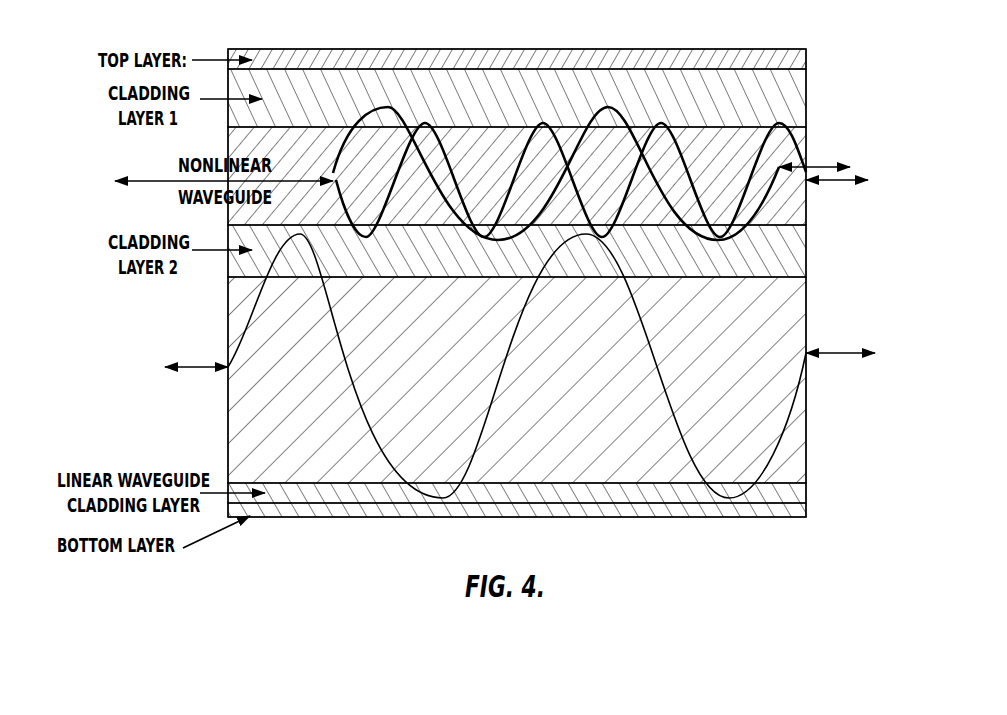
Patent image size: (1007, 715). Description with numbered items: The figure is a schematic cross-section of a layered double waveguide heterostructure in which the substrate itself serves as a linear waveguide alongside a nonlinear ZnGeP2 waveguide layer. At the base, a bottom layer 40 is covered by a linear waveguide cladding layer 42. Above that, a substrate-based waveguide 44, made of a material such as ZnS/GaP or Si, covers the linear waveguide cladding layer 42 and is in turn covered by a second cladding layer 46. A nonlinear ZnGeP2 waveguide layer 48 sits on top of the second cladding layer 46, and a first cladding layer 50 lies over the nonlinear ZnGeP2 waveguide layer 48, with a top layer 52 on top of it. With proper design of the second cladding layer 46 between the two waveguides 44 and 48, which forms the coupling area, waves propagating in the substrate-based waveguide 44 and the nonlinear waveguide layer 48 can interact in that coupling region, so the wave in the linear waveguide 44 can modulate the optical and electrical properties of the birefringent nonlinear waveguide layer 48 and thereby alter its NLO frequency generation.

The bottom layer 40 is at (806, 510).
The linear waveguide cladding layer 42 is at (806, 490).
The substrate-based waveguide 44 is at (806, 408).
The second cladding layer 46 is at (806, 252).
The nonlinear ZnGeP2 waveguide layer 48 is at (806, 146).
The first cladding layer 50 is at (806, 95).
The top layer 52 is at (806, 57).